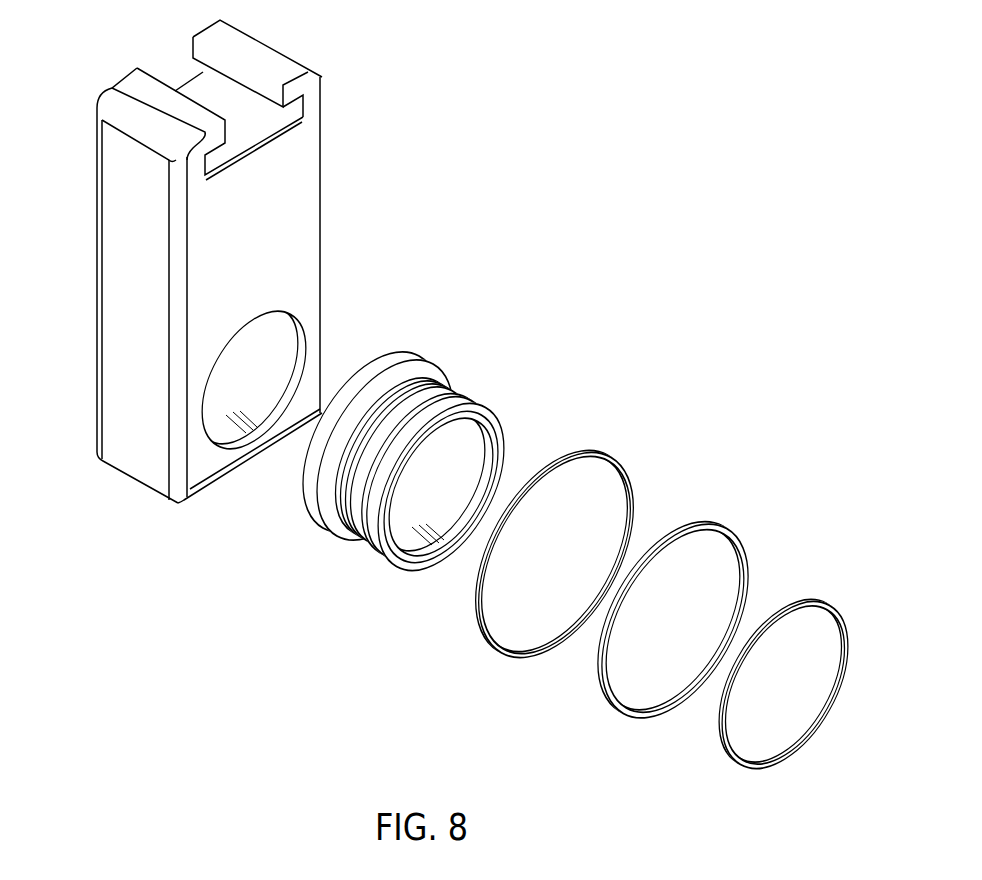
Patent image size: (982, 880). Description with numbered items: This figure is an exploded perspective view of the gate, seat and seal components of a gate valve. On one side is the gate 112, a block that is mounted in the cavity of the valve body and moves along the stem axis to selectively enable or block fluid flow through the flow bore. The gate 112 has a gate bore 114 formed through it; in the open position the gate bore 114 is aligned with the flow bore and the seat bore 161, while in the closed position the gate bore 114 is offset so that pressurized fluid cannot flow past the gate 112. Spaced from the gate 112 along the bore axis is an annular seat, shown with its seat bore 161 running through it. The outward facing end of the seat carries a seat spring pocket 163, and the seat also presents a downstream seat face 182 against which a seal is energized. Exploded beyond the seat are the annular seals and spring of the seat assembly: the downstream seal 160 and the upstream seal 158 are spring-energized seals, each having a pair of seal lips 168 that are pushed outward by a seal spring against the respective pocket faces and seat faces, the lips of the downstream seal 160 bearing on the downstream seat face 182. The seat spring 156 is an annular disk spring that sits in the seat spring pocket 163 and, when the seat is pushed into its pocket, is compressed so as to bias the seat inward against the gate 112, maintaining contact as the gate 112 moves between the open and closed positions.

The gate 112 is at (330, 233).
The gate bore 114 is at (286, 336).
The downstream seat face 182 is at (438, 373).
The seal lips 168 is at (482, 380).
The seat spring pocket 163 is at (400, 565).
The seat bore 161 is at (448, 463).
The downstream seal 160 is at (603, 452).
The upstream seal 158 is at (718, 528).
The seat spring 156 is at (832, 608).